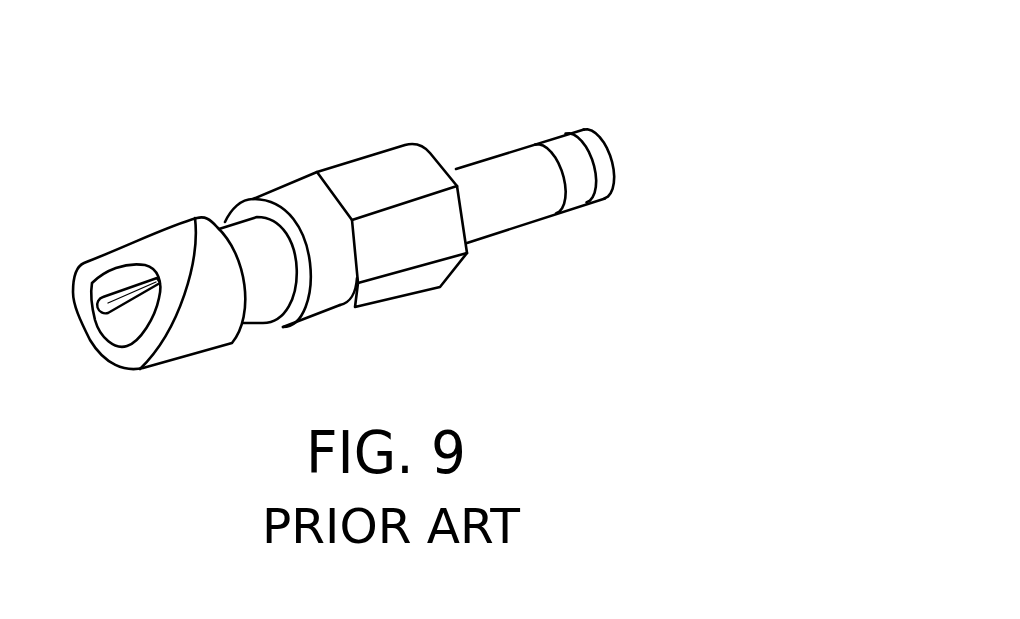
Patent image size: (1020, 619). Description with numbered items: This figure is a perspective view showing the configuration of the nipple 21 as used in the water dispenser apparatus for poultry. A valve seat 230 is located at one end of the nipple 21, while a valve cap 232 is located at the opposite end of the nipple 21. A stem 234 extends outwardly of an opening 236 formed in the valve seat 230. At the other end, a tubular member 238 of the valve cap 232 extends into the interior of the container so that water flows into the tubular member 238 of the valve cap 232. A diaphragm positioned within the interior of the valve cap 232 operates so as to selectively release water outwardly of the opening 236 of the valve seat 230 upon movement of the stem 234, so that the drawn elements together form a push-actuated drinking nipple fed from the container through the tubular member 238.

The nipple 21 is at (351, 222).
The valve seat 230 is at (181, 230).
The valve cap 232 is at (401, 163).
The stem 234 is at (121, 312).
The opening 236 is at (94, 263).
The tubular member 238 is at (512, 208).